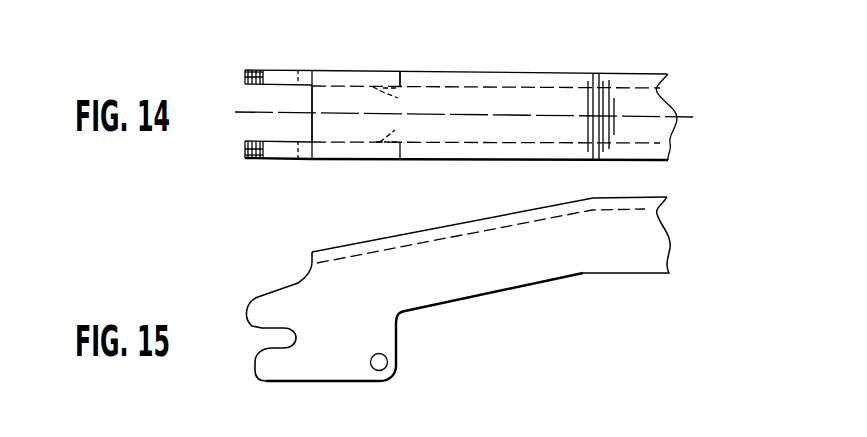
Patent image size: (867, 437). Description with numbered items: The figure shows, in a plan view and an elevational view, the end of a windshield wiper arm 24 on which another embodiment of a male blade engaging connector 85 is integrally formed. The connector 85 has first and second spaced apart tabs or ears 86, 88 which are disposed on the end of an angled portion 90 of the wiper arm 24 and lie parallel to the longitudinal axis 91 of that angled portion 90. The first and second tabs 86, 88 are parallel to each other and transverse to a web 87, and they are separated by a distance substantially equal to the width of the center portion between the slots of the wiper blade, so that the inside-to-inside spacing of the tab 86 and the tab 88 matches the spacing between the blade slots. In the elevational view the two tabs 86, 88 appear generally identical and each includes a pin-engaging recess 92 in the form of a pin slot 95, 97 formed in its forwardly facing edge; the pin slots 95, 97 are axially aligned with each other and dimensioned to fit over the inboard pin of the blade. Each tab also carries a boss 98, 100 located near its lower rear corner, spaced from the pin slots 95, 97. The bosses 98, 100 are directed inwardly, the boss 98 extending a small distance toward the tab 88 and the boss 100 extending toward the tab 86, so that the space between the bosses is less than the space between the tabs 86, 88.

In FIG. 14, the wiper arm 24 is at (642, 75).
In FIG. 15, the wiper arm 24 is at (642, 202).
In FIG. 14, the male blade engaging connector 85 is at (401, 70).
In FIG. 15, the male blade engaging connector 85 is at (407, 355).
In FIG. 14, the first tab 86 is at (272, 75).
In FIG. 14, the web 87 is at (344, 120).
In FIG. 15, the web 87 is at (407, 240).
In FIG. 14, the second tab 88 is at (273, 158).
In FIG. 15, the second tab 88 is at (330, 366).
In FIG. 14, the angled portion 90 is at (522, 102).
In FIG. 15, the angled portion 90 is at (515, 238).
In FIG. 14, the longitudinal axis 91 is at (693, 116).
In FIG. 15, the pin-engaging recess 92 is at (256, 339).
In FIG. 14, the pin slot 95 is at (245, 78).
In FIG. 14, the pin slot 97 is at (245, 151).
In FIG. 15, the pin slot 97 is at (270, 347).
In FIG. 14, the boss 98 is at (398, 98).
In FIG. 14, the boss 100 is at (395, 130).
In FIG. 15, the boss 100 is at (387, 364).